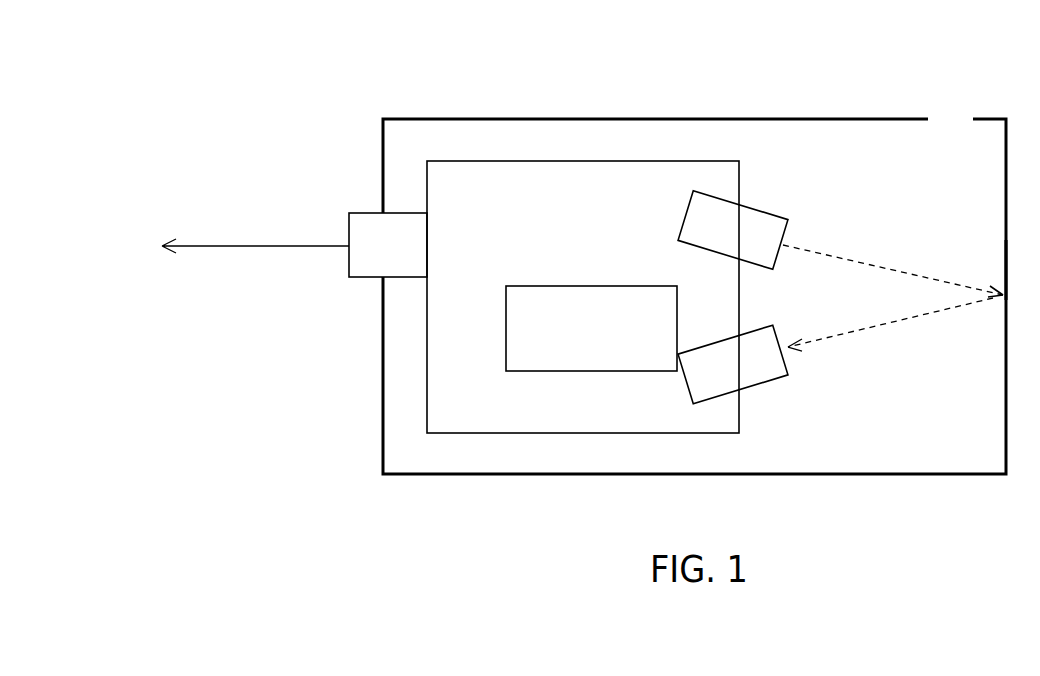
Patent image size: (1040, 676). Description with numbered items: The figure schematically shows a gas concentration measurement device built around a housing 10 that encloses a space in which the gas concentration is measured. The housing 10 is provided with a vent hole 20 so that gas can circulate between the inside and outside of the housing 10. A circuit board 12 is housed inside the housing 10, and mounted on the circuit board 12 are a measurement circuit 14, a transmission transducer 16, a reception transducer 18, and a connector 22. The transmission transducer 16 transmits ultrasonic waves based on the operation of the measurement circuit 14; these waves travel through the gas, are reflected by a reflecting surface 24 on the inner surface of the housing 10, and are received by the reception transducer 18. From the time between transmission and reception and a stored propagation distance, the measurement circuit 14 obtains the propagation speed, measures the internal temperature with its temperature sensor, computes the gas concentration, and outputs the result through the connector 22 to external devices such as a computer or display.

The housing 10 is at (683, 119).
The circuit board 12 is at (503, 160).
The measurement circuit 14 is at (527, 286).
The transmission transducer 16 is at (719, 242).
The reception transducer 18 is at (719, 379).
The vent hole 20 is at (950, 119).
The connector 22 is at (360, 213).
The reflecting surface 24 is at (1003, 253).